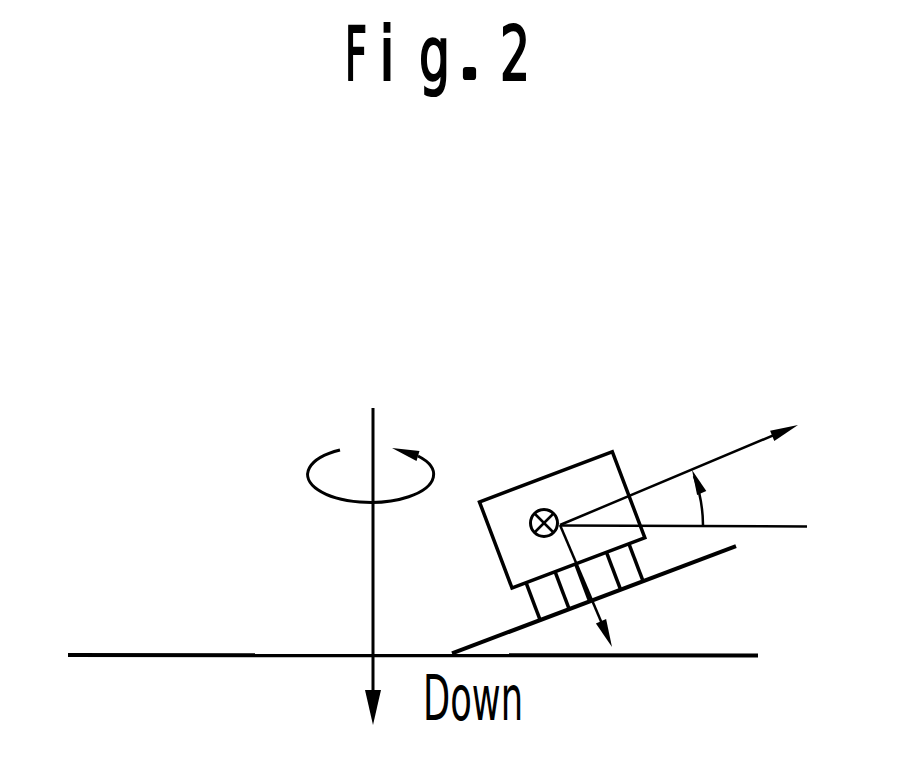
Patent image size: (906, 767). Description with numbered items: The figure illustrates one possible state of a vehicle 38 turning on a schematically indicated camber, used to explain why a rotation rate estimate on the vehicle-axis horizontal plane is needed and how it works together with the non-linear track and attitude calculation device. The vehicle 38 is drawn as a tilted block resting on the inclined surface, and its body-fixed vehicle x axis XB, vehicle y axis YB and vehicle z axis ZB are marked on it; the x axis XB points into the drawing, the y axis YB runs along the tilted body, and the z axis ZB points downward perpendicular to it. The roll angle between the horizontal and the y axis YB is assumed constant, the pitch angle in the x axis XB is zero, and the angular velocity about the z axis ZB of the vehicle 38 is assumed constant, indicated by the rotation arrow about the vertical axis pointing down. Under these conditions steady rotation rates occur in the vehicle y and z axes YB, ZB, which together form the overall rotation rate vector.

The vehicle 38 is at (497, 508).
The vehicle x axis XB is at (568, 497).
The vehicle y axis YB is at (700, 455).
The vehicle z axis ZB is at (611, 591).